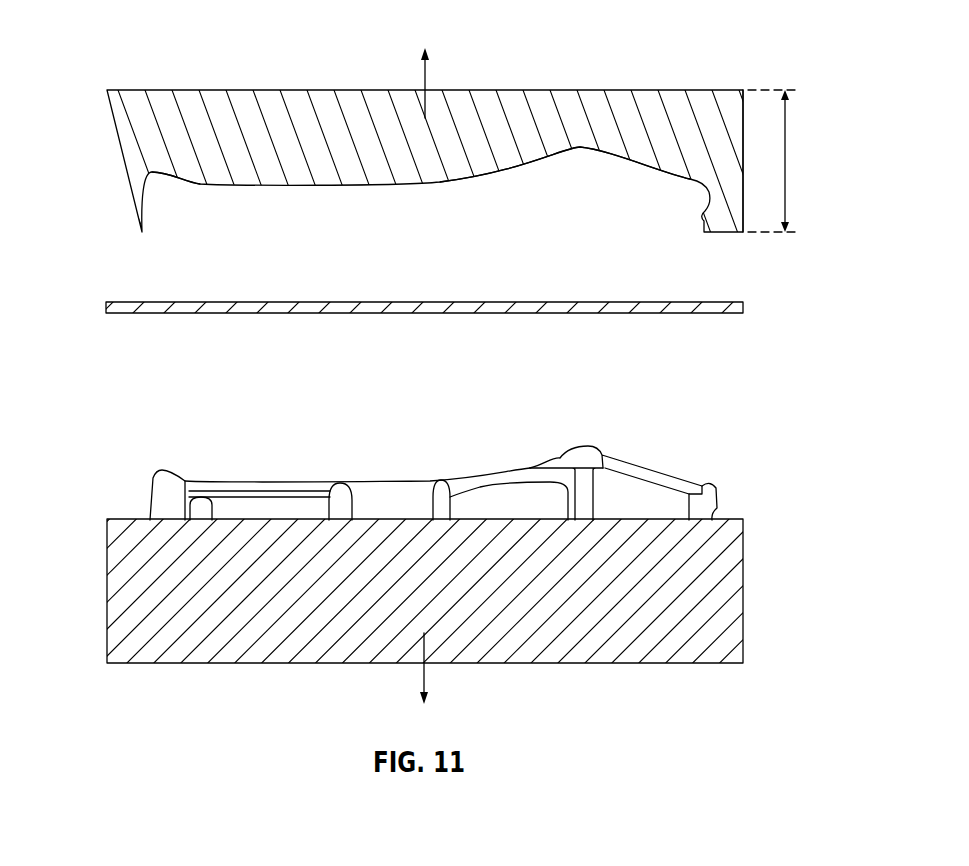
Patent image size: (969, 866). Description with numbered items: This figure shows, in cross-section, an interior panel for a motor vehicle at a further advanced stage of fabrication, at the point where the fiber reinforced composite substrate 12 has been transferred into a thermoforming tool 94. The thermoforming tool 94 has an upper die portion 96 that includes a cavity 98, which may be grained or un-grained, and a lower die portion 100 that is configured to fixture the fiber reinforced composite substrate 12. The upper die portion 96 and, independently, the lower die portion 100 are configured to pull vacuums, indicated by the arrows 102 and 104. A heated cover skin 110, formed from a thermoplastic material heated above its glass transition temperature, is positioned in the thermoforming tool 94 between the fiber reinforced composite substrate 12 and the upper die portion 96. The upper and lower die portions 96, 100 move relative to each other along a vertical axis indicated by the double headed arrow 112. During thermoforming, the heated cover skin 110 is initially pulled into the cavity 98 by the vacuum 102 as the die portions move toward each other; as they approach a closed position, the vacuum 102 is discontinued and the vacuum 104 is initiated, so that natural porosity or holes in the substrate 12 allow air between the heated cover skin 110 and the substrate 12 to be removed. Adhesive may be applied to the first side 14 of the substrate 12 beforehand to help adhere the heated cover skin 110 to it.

The fiber reinforced composite substrate 12 is at (650, 466).
The first side 14 is at (245, 482).
The thermoforming tool 94 is at (672, 66).
The upper die portion 96 is at (166, 92).
The cavity 98 is at (592, 189).
The lower die portion 100 is at (677, 663).
The vacuum 102 is at (427, 82).
The vacuum 104 is at (427, 672).
The heated cover skin 110 is at (112, 305).
The double headed arrow 112 is at (788, 160).